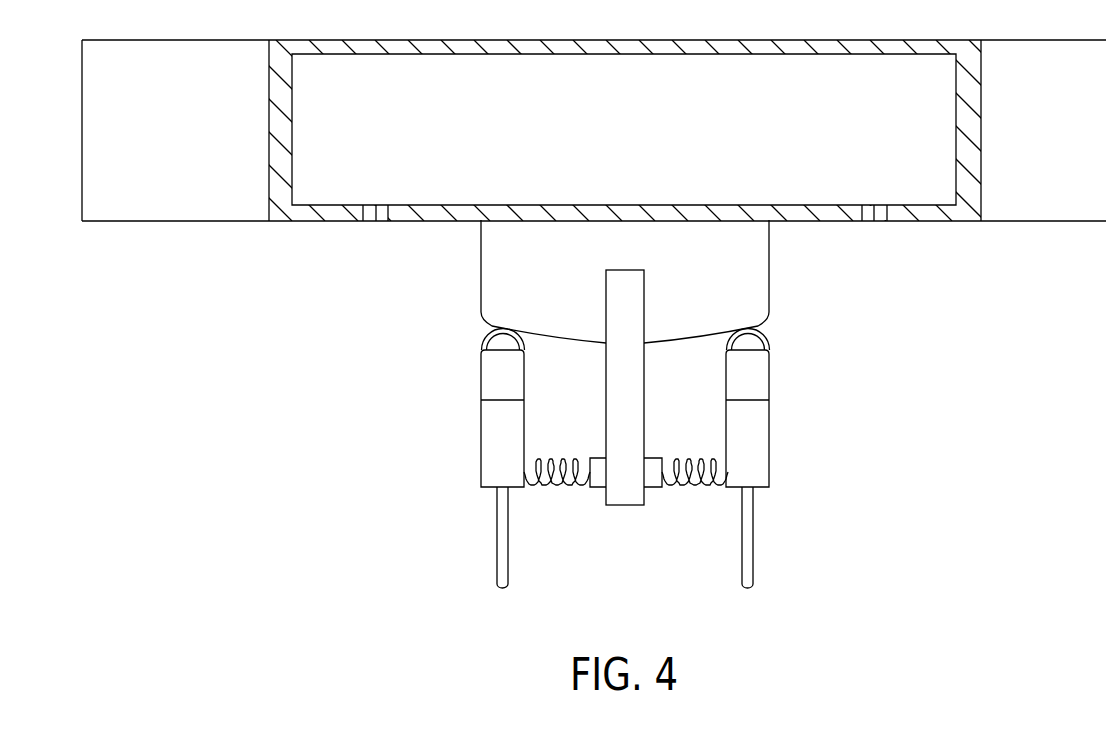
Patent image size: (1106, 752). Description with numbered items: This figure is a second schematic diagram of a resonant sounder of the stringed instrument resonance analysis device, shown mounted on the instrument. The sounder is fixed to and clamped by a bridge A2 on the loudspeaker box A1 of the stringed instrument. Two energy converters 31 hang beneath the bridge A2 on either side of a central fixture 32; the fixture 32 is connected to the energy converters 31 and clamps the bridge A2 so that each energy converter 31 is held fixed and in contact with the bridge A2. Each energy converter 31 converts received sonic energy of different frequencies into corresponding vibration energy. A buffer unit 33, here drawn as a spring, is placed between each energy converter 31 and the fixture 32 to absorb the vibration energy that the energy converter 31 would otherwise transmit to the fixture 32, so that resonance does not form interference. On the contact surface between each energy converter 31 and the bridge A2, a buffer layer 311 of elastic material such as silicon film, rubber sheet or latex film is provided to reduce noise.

The loudspeaker box A1 is at (233, 192).
The bridge A2 is at (493, 265).
The energy converter 31 is at (493, 432).
The buffer layer 311 is at (482, 342).
The fixture 32 is at (620, 385).
The buffer unit 33 is at (553, 477).